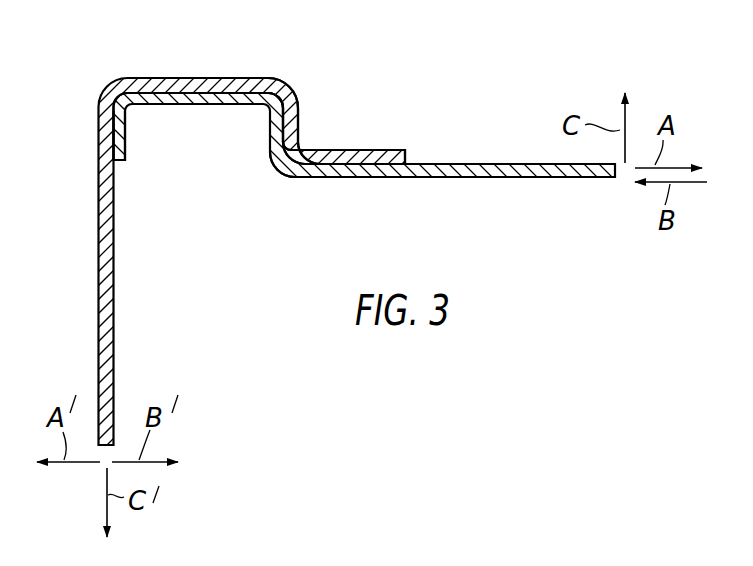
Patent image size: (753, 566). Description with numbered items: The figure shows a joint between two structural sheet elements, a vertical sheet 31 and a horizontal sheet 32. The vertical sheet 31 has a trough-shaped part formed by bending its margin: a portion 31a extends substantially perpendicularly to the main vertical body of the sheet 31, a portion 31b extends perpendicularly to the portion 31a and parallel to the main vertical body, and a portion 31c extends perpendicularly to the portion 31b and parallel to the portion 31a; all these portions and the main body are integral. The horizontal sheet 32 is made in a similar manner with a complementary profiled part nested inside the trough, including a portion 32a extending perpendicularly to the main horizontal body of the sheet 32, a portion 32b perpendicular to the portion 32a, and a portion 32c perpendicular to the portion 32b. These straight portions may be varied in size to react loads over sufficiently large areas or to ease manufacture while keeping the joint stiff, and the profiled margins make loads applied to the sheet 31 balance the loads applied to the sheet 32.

The vertical sheet 31 is at (118, 263).
The portion of vertical sheet 31a is at (170, 77).
The portion of vertical sheet 31b is at (298, 122).
The portion of vertical sheet 31c is at (368, 152).
The horizontal sheet 32 is at (466, 168).
The portion of horizontal sheet 32a is at (270, 138).
The portion of horizontal sheet 32b is at (200, 100).
The portion of horizontal sheet 32c is at (127, 155).